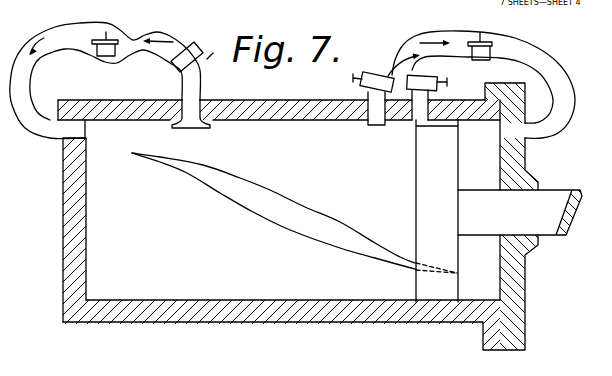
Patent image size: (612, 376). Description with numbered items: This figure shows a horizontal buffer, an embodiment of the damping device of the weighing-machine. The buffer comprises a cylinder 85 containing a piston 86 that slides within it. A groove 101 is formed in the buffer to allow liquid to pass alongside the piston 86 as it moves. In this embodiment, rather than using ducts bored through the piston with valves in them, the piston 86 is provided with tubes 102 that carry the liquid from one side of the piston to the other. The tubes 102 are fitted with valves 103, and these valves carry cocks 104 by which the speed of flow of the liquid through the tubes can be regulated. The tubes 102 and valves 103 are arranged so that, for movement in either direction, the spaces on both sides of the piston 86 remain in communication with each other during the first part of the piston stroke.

The cylinder 85 is at (235, 316).
The piston 86 is at (424, 174).
The groove 101 is at (252, 193).
The tubes 102 is at (33, 51).
The valves 103 is at (112, 53).
The cocks 104 is at (210, 55).